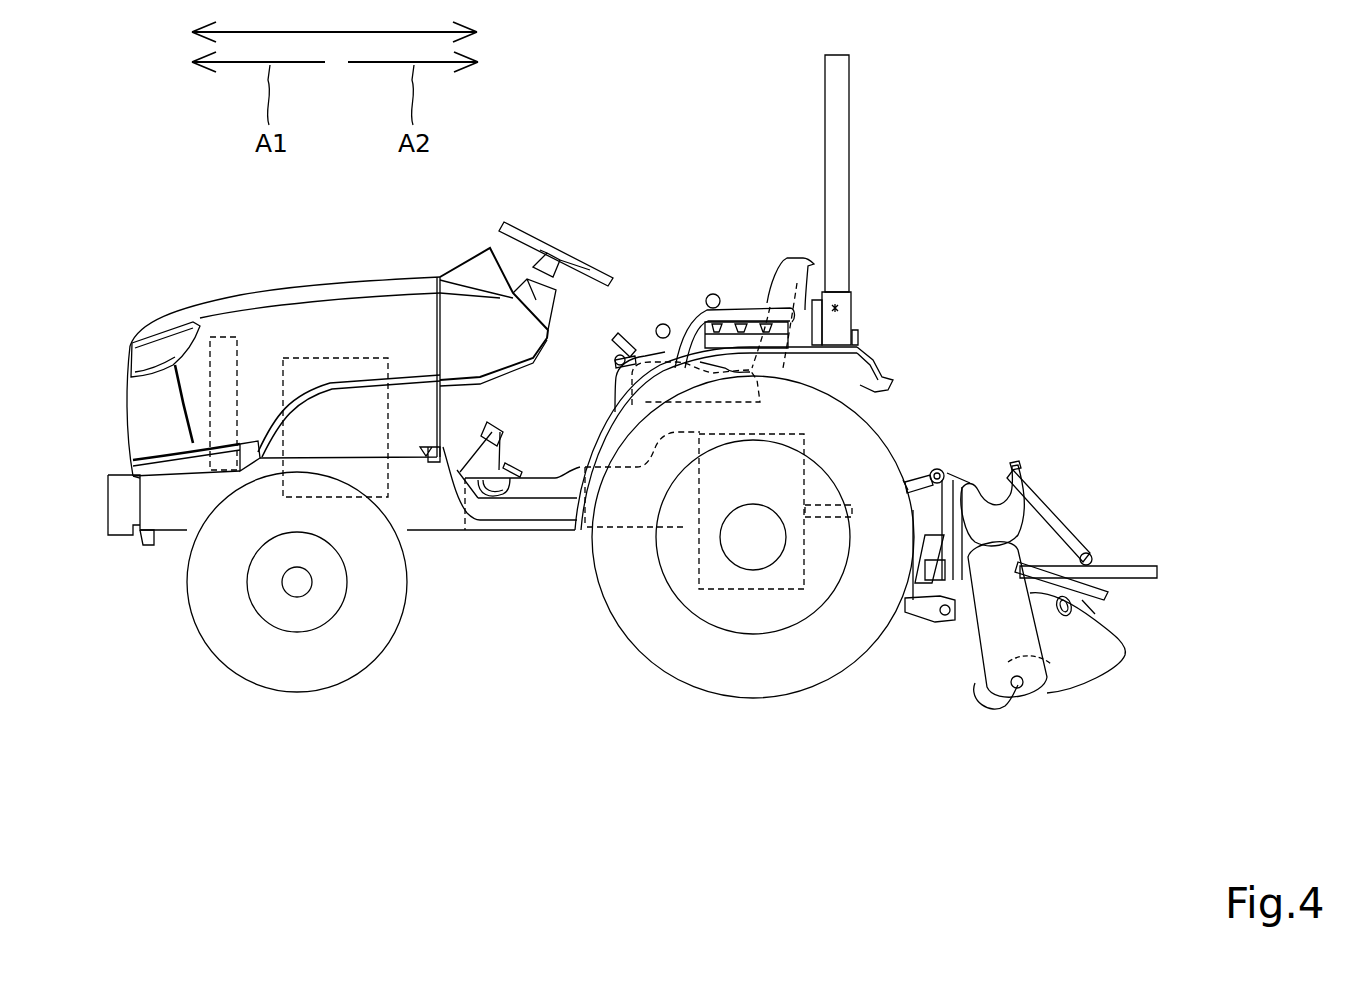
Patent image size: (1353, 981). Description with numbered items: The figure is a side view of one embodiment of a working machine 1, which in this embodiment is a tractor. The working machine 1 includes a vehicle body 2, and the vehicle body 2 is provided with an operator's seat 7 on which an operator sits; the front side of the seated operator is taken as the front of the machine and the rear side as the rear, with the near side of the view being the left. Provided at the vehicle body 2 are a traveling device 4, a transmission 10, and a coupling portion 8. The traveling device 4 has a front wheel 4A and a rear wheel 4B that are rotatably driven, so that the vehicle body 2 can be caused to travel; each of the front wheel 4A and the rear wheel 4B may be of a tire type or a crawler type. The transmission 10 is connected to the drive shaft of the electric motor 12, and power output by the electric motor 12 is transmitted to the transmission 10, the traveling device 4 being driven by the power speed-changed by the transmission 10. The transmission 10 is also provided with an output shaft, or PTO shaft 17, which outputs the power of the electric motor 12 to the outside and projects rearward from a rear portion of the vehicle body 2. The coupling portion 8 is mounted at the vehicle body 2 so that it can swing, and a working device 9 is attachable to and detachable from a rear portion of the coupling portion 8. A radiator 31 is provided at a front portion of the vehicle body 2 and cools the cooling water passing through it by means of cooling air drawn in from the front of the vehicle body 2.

The working machine 1 is at (1042, 99).
The vehicle body 2 is at (185, 532).
The traveling device 4 is at (589, 684).
The front wheel 4A is at (388, 646).
The rear wheel 4B is at (627, 646).
The operator's seat 7 is at (800, 258).
The coupling portion 8 is at (925, 468).
The working device 9 is at (1045, 485).
The transmission 10 is at (698, 552).
The electric motor 12 is at (342, 357).
The output shaft (PTO shaft) 17 is at (852, 512).
The radiator 31 is at (226, 336).